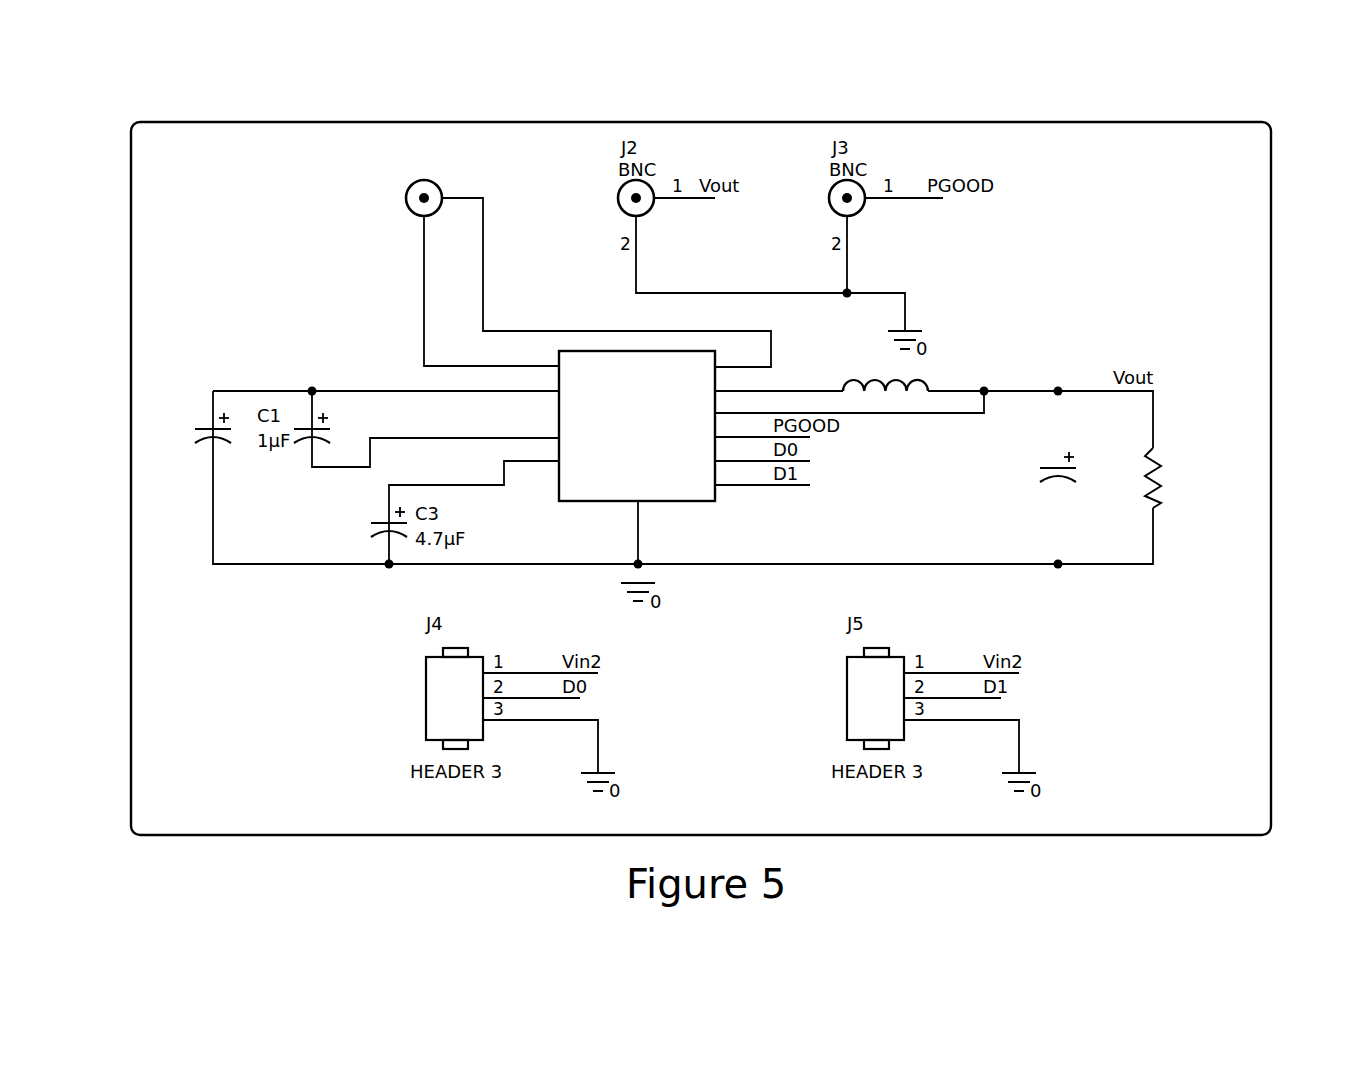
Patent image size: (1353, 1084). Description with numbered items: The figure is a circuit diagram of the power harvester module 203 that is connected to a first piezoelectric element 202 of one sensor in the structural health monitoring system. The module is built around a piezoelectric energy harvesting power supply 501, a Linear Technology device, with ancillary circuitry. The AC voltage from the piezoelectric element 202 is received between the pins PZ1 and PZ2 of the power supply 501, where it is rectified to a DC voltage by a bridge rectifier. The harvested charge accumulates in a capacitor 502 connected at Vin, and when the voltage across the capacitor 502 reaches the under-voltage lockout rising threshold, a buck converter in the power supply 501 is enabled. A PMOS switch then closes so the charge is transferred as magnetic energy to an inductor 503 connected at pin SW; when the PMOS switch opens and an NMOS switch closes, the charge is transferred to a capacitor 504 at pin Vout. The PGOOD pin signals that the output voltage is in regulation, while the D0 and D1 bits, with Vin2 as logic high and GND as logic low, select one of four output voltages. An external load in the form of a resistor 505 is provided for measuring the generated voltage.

The first piezoelectric element 202 is at (406, 192).
The power harvester module 203 is at (573, 122).
The piezoelectric energy harvesting power supply 501 is at (567, 488).
The capacitor 502 is at (205, 430).
The inductor 503 is at (928, 382).
The capacitor 504 is at (1068, 480).
The resistor 505 is at (1162, 480).